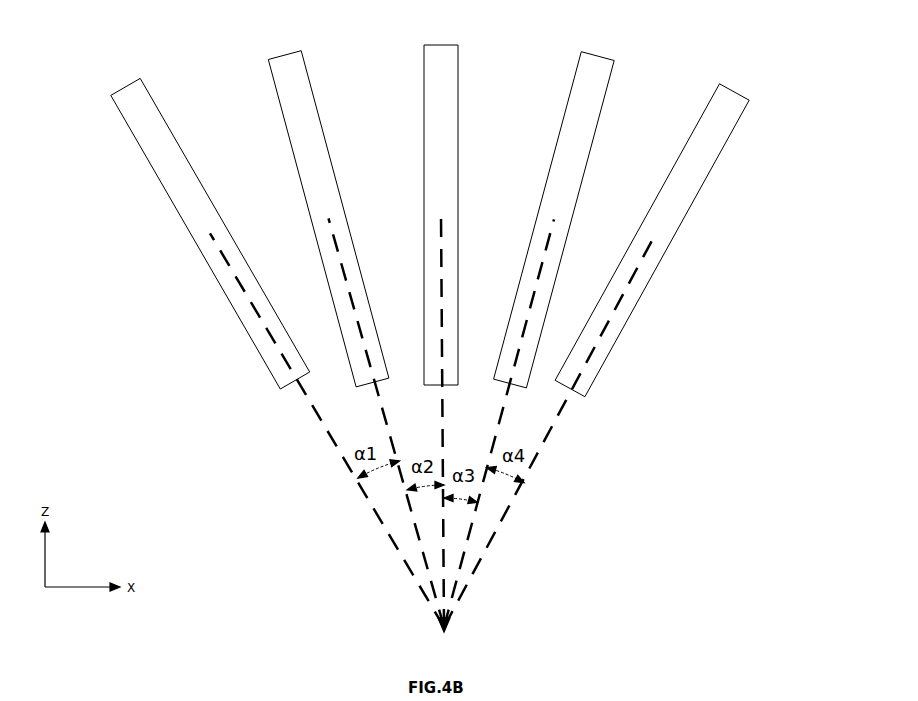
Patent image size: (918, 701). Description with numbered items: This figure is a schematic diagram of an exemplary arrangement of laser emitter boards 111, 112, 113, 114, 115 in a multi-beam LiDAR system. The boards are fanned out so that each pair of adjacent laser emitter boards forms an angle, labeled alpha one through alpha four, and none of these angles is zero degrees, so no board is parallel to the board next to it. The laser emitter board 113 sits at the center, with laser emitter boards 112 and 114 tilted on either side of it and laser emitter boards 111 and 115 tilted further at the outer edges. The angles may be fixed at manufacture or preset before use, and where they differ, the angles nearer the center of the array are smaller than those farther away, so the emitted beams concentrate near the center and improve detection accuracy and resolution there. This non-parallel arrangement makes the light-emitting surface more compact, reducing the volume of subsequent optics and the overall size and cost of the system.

The laser emitter board 111 is at (128, 82).
The laser emitter board 112 is at (282, 53).
The laser emitter board 113 is at (440, 45).
The laser emitter board 114 is at (600, 52).
The laser emitter board 115 is at (740, 92).